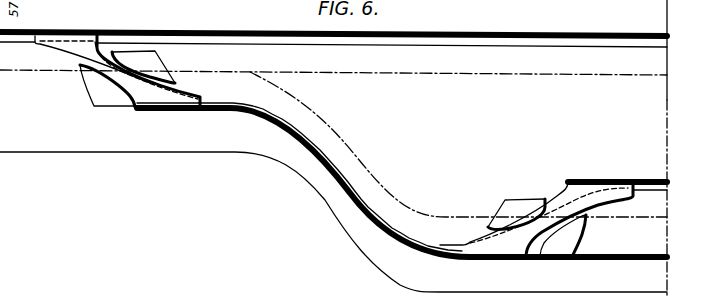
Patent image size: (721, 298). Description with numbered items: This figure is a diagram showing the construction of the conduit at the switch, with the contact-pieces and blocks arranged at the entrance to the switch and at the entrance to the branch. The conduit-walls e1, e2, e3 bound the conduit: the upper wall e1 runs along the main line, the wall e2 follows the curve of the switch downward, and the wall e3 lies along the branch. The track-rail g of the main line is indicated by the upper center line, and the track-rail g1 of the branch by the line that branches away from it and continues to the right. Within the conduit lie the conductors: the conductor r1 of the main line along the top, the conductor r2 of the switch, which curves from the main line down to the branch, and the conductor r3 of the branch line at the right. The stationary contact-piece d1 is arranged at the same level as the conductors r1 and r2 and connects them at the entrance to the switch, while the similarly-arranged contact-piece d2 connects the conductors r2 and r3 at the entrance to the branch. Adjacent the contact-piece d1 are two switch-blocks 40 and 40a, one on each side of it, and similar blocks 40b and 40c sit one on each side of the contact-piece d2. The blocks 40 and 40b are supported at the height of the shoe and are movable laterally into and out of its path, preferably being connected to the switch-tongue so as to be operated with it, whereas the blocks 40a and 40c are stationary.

The conduit-wall e1 is at (236, 31).
The conductor of the main line r1 is at (494, 45).
The stationary contact-piece d1 is at (58, 42).
The switch-block 40 is at (128, 51).
The switch-block 40a is at (94, 95).
The track-rail of the main line g is at (37, 70).
The track-rail of the branch g1 is at (622, 218).
The conductor of the switch r2 is at (345, 189).
The conduit-wall e2 is at (381, 234).
The conduit-wall e3 is at (583, 178).
The conductor of the branch line r3 is at (636, 187).
The contact-piece d2 is at (502, 243).
The switch-block 40b is at (505, 200).
The switch-block 40c is at (560, 243).